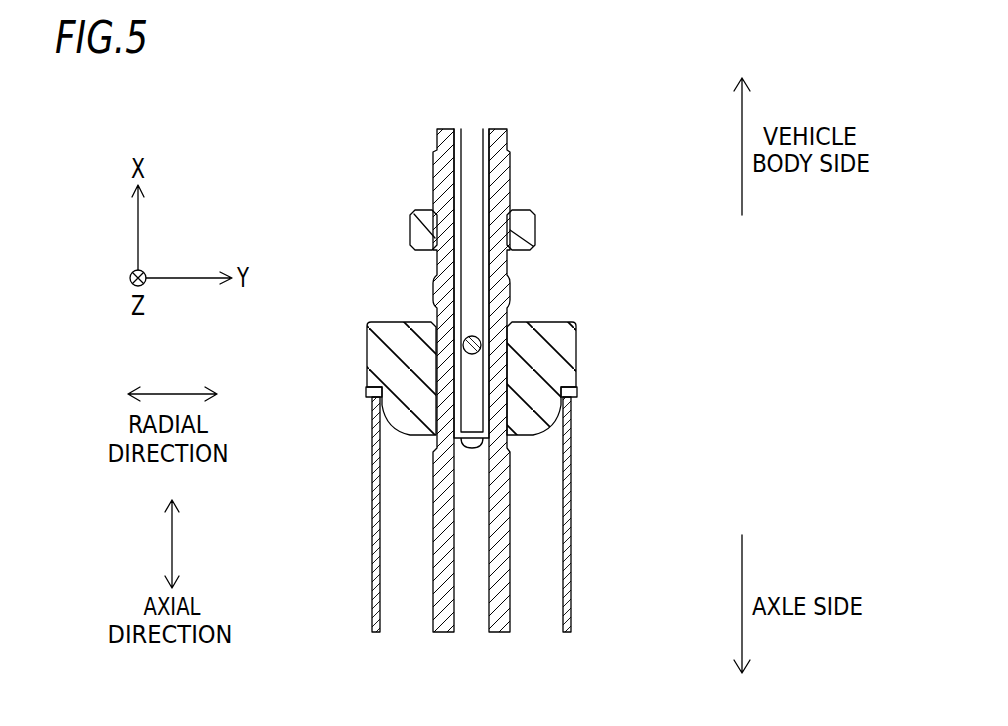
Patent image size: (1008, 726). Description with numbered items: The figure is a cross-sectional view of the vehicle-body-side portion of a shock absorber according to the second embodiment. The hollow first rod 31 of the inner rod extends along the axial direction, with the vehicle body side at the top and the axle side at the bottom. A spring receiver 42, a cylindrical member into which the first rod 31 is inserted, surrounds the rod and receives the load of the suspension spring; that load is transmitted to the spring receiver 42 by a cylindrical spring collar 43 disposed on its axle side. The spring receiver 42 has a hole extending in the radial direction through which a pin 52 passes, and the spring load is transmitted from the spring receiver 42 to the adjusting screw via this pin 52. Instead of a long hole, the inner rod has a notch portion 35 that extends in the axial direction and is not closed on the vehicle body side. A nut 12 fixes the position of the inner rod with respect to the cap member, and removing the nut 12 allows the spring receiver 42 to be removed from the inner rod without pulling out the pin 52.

The nut 12 is at (520, 230).
The first rod 31 is at (507, 495).
The notch portion 35 is at (457, 232).
The spring receiver 42 is at (560, 341).
The spring collar 43 is at (572, 565).
The pin 52 is at (474, 337).